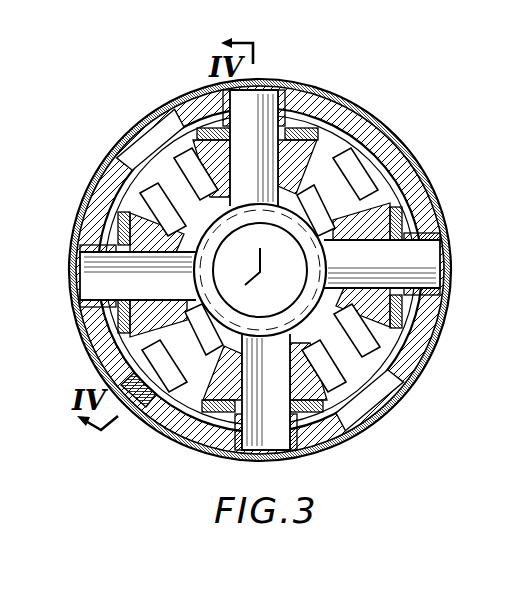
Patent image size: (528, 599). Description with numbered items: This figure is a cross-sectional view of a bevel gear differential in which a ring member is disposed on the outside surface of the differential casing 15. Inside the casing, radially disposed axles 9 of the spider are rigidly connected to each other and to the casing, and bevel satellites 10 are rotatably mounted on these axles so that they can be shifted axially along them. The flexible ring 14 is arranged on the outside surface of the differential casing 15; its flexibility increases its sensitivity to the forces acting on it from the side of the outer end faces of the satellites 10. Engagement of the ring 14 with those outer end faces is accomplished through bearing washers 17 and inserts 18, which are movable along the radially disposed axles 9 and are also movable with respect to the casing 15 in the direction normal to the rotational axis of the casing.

The radially disposed axles 9 is at (74, 273).
The bevel satellites 10 is at (94, 330).
The ring 14 is at (383, 125).
The differential casing 15 is at (434, 182).
The bearing washers 17 is at (420, 308).
The inserts 18 is at (447, 237).